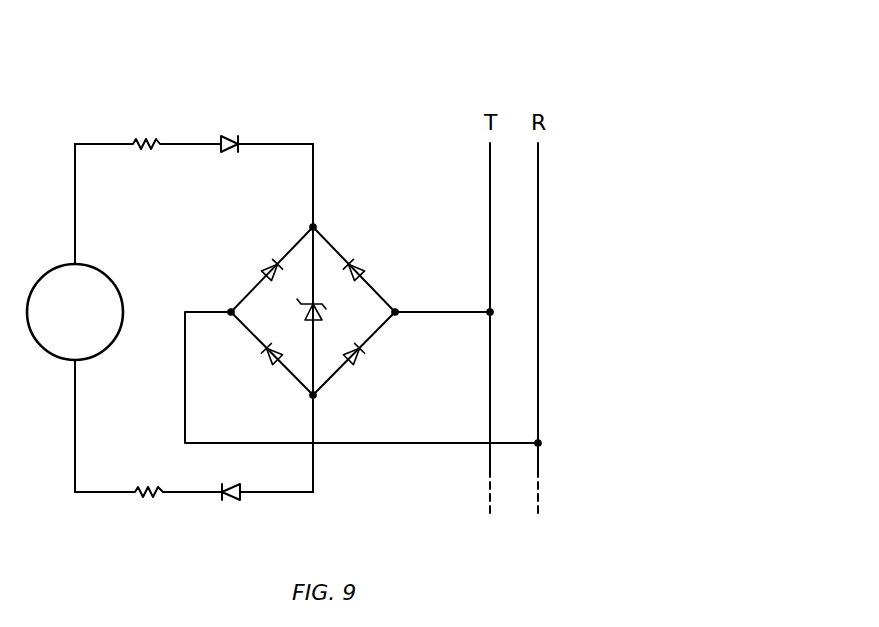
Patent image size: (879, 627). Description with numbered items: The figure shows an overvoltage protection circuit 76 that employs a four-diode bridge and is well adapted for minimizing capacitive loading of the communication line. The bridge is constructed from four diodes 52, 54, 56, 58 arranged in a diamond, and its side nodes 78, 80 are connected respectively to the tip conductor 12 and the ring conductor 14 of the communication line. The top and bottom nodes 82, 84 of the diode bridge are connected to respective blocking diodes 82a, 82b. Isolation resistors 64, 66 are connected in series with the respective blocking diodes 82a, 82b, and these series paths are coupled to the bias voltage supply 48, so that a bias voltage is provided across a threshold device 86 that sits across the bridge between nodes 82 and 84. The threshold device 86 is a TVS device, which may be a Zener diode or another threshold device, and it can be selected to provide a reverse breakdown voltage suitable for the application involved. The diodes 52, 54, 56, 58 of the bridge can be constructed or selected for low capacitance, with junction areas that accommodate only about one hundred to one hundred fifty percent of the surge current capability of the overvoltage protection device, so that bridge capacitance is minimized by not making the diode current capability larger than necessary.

The overvoltage protection circuit 76 is at (93, 68).
The bias voltage supply 48 is at (103, 270).
The isolation resistor 64 is at (140, 140).
The isolation resistor 66 is at (142, 498).
The blocking diode 82a is at (228, 138).
The blocking diode 82b is at (230, 500).
The node 82 is at (318, 223).
The node 84 is at (318, 398).
The node 80 is at (228, 306).
The node 78 is at (400, 308).
The diode 52 is at (362, 264).
The diode 54 is at (360, 366).
The diode 56 is at (266, 264).
The diode 58 is at (268, 366).
The threshold device 86 is at (324, 312).
The tip conductor 12 is at (488, 217).
The ring conductor 14 is at (540, 263).